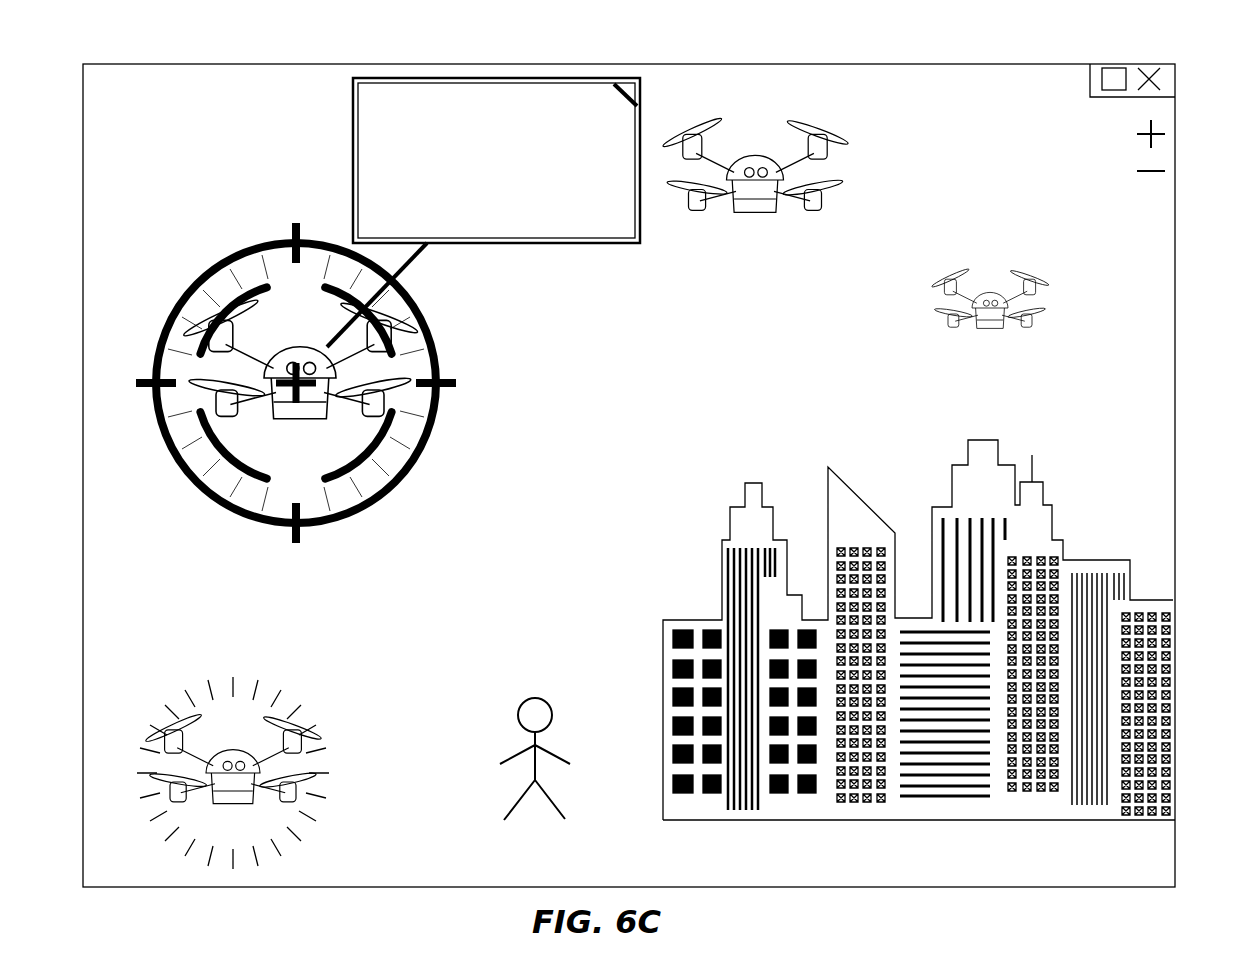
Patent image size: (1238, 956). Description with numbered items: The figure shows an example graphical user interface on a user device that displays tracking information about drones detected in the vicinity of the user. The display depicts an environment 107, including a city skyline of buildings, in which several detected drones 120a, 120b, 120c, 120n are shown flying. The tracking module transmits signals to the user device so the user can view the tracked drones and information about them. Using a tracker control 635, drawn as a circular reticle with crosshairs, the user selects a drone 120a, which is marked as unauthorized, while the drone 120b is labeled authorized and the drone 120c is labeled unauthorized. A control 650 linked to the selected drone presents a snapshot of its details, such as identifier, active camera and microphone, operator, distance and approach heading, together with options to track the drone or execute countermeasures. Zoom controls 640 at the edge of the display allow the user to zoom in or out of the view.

The environment 107 is at (940, 431).
The drone 120a is at (300, 370).
The drone 120b is at (793, 142).
The drone 120c is at (290, 812).
The drone 120n is at (1003, 306).
The tracker control 635 is at (410, 468).
The zoom controls 640 is at (1166, 113).
The control 650 is at (447, 78).